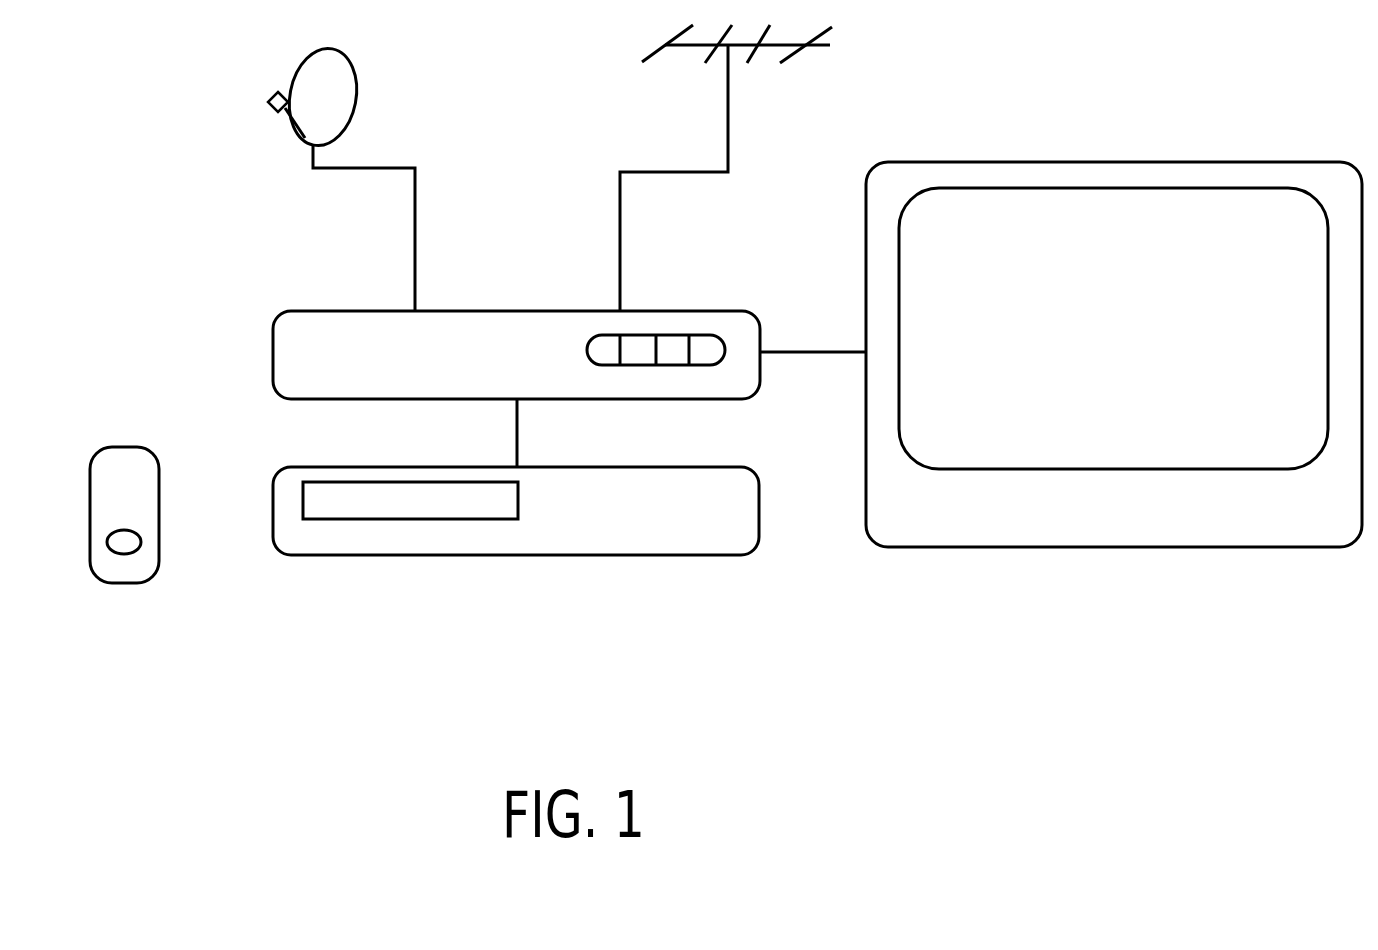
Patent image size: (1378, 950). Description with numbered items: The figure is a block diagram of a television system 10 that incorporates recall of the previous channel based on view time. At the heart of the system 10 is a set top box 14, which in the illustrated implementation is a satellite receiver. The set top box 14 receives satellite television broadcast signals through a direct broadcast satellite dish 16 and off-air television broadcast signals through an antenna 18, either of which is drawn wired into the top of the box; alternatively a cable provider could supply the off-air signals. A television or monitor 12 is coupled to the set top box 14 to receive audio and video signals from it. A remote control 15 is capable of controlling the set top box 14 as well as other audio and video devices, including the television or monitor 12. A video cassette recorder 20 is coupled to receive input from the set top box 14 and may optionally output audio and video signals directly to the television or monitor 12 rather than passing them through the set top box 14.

The television system 10 is at (110, 201).
The television or monitor 12 is at (1180, 162).
The set top box 14 is at (284, 298).
The remote control 15 is at (78, 481).
The direct broadcast satellite dish 16 is at (345, 112).
The antenna 18 is at (690, 60).
The video cassette recorder 20 is at (717, 557).